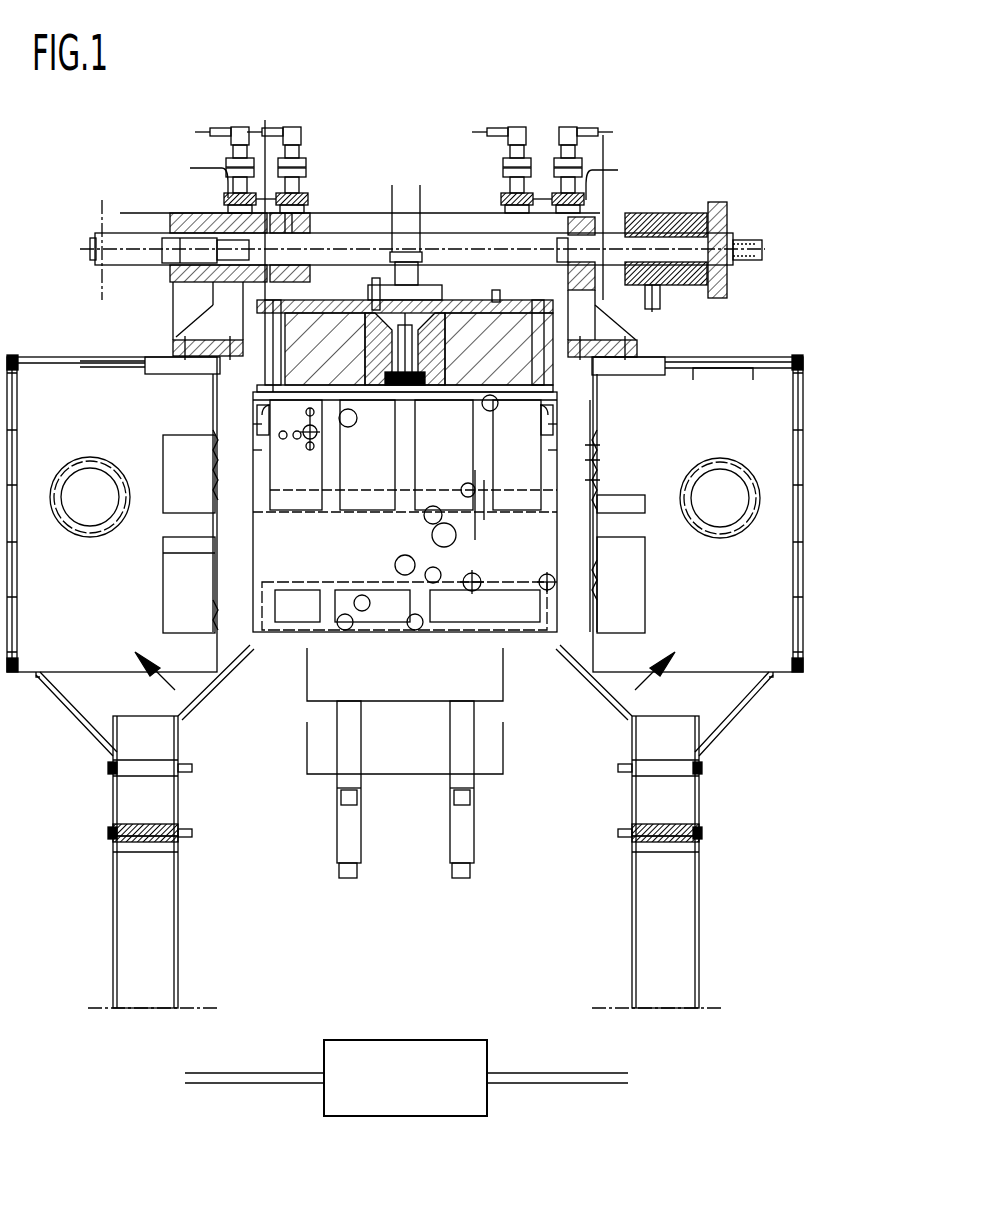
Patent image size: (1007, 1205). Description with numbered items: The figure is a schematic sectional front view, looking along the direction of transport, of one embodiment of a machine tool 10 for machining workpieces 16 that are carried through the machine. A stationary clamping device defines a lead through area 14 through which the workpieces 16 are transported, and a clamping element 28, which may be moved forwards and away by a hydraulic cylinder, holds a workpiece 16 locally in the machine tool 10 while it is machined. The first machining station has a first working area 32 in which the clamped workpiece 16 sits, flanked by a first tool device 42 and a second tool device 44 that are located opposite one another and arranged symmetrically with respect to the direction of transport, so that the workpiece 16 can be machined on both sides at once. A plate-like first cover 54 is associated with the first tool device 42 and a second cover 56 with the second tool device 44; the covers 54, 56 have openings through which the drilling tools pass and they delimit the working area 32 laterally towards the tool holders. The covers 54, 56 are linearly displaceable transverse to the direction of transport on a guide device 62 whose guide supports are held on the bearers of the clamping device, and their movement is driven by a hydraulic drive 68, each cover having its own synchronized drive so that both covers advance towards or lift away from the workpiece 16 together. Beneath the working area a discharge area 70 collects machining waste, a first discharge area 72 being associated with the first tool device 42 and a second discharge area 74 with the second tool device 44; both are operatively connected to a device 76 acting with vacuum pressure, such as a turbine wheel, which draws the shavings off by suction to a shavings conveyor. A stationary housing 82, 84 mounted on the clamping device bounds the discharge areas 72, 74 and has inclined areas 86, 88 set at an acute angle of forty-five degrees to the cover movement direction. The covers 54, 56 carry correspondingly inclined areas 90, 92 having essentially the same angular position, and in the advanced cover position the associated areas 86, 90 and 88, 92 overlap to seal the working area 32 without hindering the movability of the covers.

The machine tool 10 is at (598, 70).
The lead through area 14 is at (550, 298).
The workpiece 16 is at (515, 565).
The clamping element 28 is at (478, 335).
The first working area 32 is at (573, 430).
The first tool device 42 is at (180, 715).
The second tool device 44 is at (630, 715).
The first cover 54 is at (215, 522).
The second cover 56 is at (588, 478).
The guide device 62 is at (172, 195).
The hydraulic drive 68 is at (688, 210).
The discharge area 70 is at (688, 533).
The first discharge area 72 is at (140, 718).
The second discharge area 74 is at (675, 725).
The device acting with vacuum pressure 76 is at (432, 1050).
The housing 82 is at (178, 872).
The housing 84 is at (632, 872).
The inclined housing area 86 is at (235, 662).
The inclined housing area 88 is at (577, 662).
The inclined cover area 90 is at (205, 653).
The inclined cover area 92 is at (613, 660).